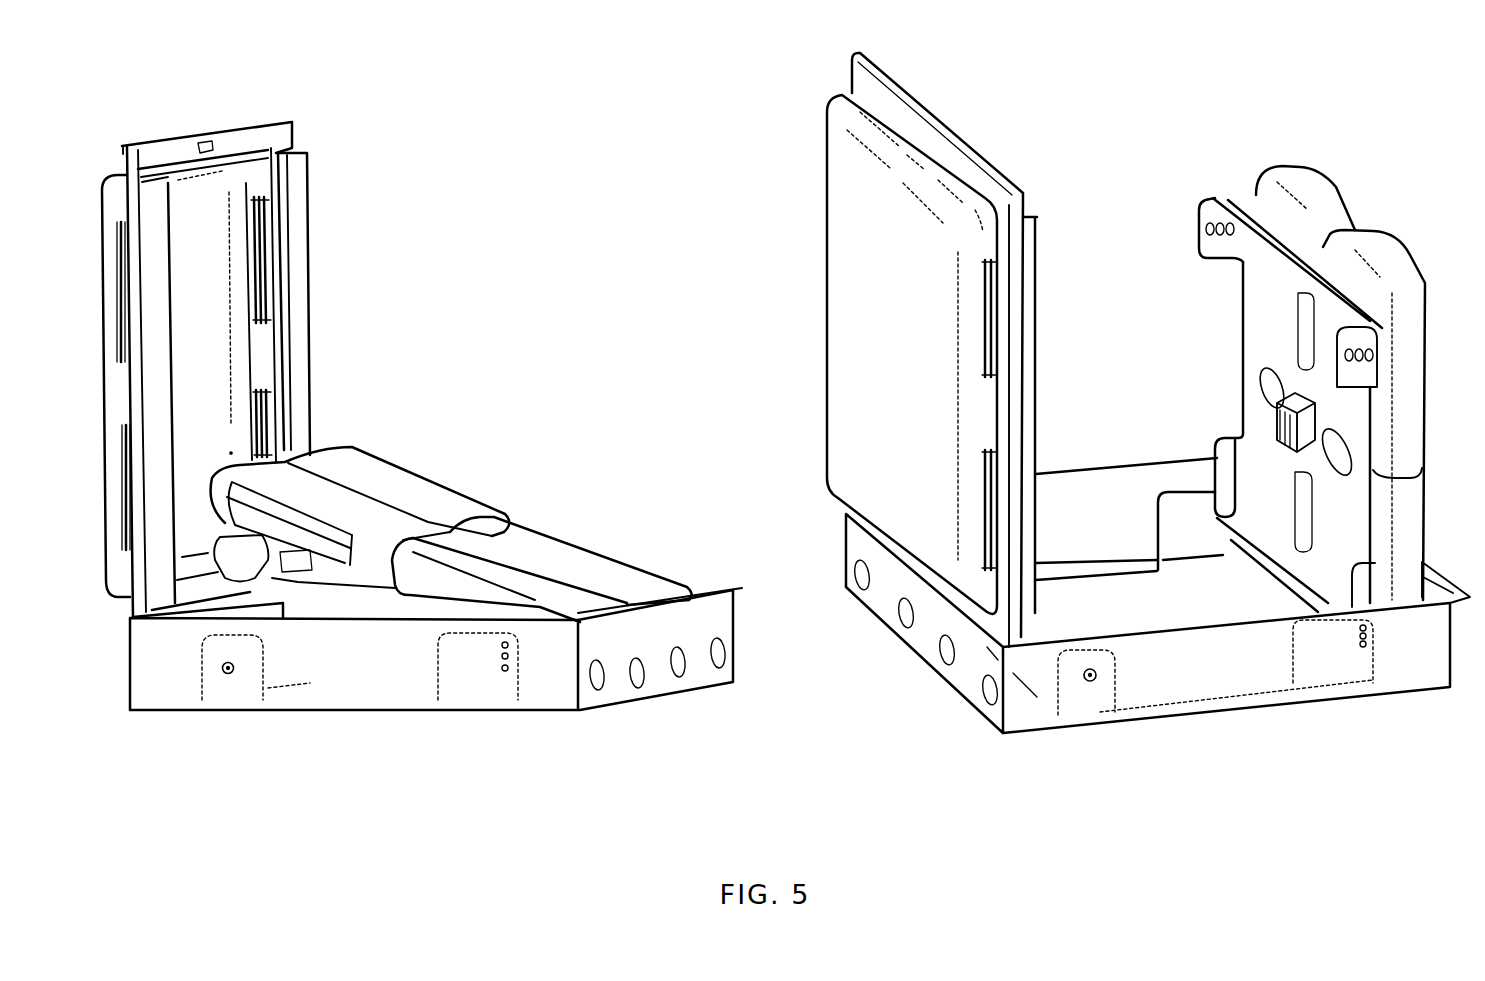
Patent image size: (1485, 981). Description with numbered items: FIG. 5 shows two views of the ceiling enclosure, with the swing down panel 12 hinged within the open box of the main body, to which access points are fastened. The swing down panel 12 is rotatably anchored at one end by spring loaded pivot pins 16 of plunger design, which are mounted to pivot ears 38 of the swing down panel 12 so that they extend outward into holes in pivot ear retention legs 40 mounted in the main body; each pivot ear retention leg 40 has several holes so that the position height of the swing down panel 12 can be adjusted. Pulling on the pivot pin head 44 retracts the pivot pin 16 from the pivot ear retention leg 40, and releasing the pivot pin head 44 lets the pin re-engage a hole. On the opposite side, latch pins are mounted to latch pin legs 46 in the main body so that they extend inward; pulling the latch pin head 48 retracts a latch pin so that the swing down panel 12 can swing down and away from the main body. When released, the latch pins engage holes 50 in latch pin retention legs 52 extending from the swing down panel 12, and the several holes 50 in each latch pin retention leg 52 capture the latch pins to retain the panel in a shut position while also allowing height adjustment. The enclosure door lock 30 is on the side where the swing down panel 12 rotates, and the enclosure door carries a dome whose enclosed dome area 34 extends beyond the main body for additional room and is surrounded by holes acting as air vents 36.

The swing down panel 12 is at (295, 293).
The spring loaded pivot pin 16 is at (503, 677).
The enclosure door lock 30 is at (290, 128).
The dome area 34 is at (205, 358).
The air vents 36 is at (270, 232).
The pivot ear 38 is at (1226, 463).
The pivot ear retention leg 40 is at (1320, 668).
The pivot pin head 44 is at (1209, 487).
The latch pin leg 46 is at (248, 670).
The latch pin head 48 is at (227, 677).
The hole 50 is at (1198, 220).
The latch pin retention leg 52 is at (1217, 197).